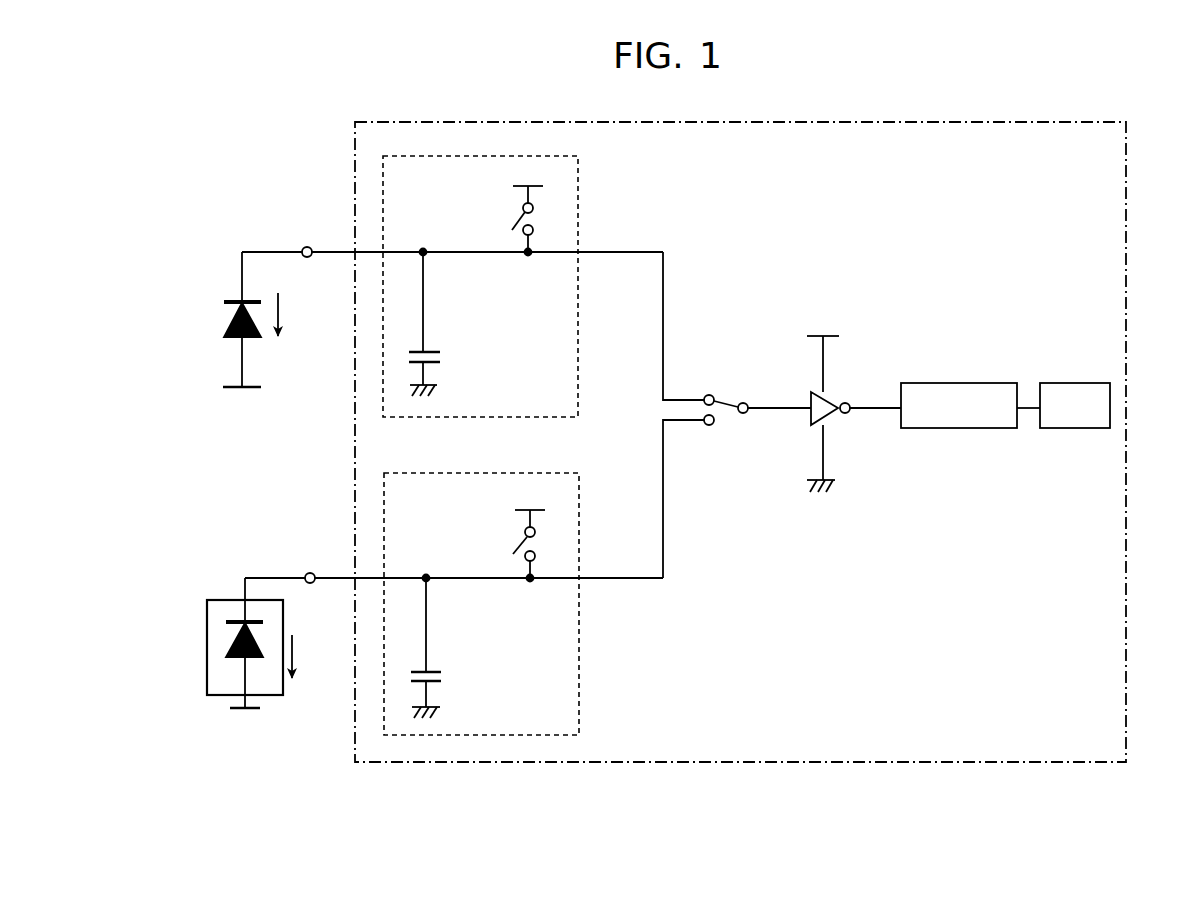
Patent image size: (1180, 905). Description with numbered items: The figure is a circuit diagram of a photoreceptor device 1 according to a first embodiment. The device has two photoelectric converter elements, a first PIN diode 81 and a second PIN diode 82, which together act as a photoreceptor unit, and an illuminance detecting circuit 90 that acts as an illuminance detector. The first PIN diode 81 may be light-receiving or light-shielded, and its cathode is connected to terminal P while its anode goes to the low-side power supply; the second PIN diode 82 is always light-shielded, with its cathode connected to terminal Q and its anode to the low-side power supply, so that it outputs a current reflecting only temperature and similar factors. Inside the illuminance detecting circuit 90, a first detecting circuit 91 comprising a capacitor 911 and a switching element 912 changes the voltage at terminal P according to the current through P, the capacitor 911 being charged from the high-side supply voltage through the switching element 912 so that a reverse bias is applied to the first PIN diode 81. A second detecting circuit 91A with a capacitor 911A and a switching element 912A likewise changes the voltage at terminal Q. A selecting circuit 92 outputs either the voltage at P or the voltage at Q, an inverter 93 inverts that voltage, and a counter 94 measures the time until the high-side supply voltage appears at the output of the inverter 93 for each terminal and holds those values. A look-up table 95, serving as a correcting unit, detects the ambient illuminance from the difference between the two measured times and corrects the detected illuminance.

The photoreceptor device 1 is at (1140, 188).
The first PIN diode 81 is at (222, 318).
The second PIN diode 82 is at (222, 653).
The illuminance detecting circuit 90 is at (745, 763).
The first detecting circuit 91 is at (579, 209).
The capacitor 911 is at (447, 355).
The switching element 912 is at (503, 218).
The second detecting circuit 91A is at (580, 655).
The capacitor 911A is at (447, 680).
The switching element 912A is at (503, 542).
The selecting circuit 92 is at (729, 422).
The inverter 93 is at (838, 438).
The counter 94 is at (972, 430).
The look-up table 95 is at (1068, 430).